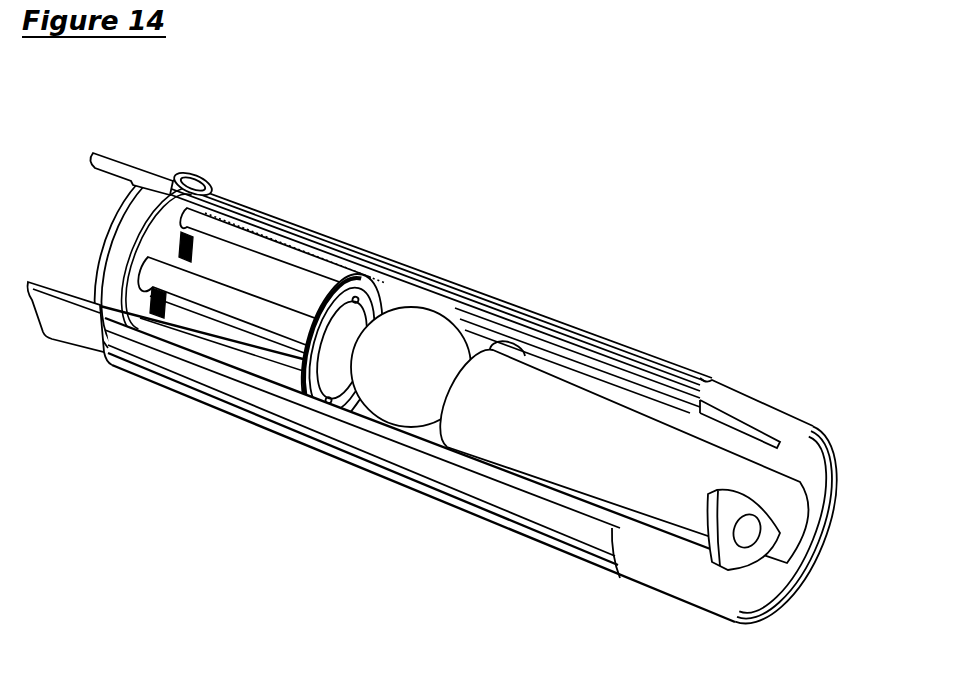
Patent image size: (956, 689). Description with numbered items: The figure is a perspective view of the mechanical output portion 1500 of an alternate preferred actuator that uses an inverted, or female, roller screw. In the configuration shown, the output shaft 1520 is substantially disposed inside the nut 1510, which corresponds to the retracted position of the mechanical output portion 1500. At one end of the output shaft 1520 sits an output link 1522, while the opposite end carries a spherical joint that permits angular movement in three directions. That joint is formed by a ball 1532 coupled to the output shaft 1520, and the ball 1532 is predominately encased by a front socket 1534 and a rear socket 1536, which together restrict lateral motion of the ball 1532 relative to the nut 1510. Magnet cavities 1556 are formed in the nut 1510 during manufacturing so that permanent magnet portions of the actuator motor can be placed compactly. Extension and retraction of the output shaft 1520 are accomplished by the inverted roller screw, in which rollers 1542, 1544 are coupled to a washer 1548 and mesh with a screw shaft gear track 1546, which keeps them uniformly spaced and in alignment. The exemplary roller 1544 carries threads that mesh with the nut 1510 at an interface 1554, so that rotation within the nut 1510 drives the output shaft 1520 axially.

The mechanical output portion 1500 is at (514, 160).
The nut 1510 is at (137, 172).
The output shaft 1520 is at (645, 418).
The output link 1522 is at (758, 533).
The ball 1532 is at (465, 345).
The front socket 1534 is at (490, 348).
The rear socket 1536 is at (407, 302).
The roller 1542 is at (210, 312).
The roller 1544 is at (283, 280).
The screw shaft gear track 1546 is at (153, 310).
The washer 1548 is at (335, 340).
The interface 1554 is at (300, 245).
The magnet cavities 1556 is at (213, 182).